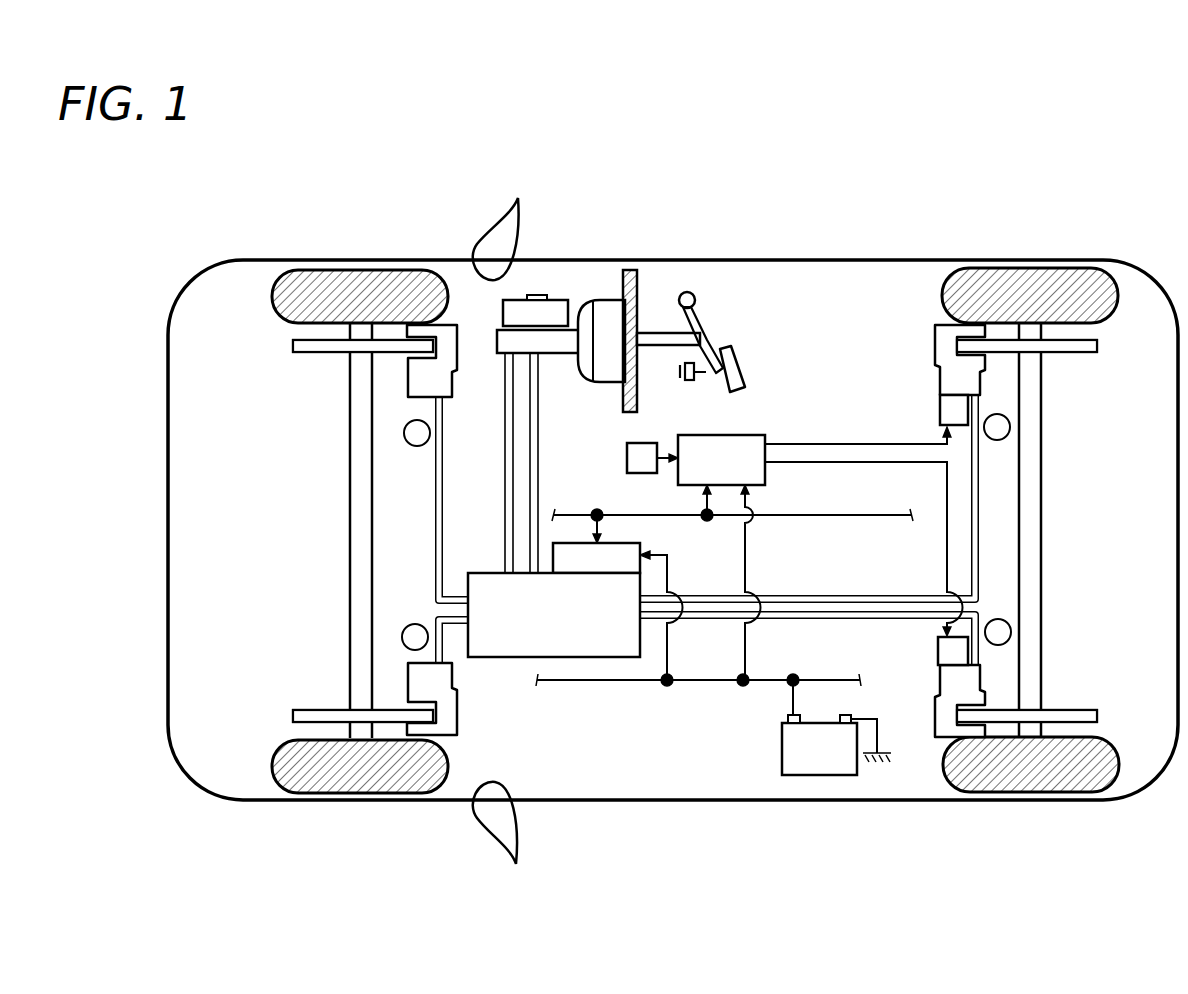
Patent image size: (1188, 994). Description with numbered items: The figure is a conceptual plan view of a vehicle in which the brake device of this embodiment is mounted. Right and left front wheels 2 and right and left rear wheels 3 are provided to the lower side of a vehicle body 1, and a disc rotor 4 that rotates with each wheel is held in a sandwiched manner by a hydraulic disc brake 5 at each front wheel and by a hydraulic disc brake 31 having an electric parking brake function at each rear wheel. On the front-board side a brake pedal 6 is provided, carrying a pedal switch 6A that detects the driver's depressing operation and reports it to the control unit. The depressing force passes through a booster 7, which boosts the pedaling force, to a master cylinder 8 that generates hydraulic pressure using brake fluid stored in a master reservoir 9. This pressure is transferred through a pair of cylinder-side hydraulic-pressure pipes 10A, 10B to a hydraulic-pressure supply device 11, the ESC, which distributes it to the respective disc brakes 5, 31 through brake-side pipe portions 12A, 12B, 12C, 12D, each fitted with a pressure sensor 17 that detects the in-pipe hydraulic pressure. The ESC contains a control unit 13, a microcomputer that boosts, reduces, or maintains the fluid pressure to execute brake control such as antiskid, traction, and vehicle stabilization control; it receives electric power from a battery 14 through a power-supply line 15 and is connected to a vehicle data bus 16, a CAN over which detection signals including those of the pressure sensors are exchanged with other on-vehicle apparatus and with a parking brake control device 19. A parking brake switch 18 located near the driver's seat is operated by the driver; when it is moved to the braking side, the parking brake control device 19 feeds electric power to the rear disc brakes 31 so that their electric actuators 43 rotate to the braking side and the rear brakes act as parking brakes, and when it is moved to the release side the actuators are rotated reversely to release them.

The vehicle body 1 is at (795, 259).
The front wheels 2 is at (343, 285).
The rear wheels 3 is at (1028, 282).
The disc rotor 4 is at (293, 346).
The hydraulic disc brake 5 is at (448, 330).
The brake pedal 6 is at (740, 357).
The pedal switch 6A is at (688, 381).
The booster 7 is at (603, 318).
The master cylinder 8 is at (508, 346).
The master reservoir 9 is at (547, 310).
The cylinder-side hydraulic-pressure pipe 10A is at (505, 443).
The cylinder-side hydraulic-pressure pipe 10B is at (540, 437).
The hydraulic-pressure supply device (ESC) 11 is at (520, 660).
The brake-side pipe portion 12A is at (435, 540).
The brake-side pipe portion 12B is at (435, 618).
The brake-side pipe portion 12C is at (982, 522).
The brake-side pipe portion 12D is at (984, 652).
The control unit 13 is at (640, 548).
The battery 14 is at (818, 778).
The power-supply line 15 is at (690, 683).
The vehicle data bus 16 is at (727, 520).
The pressure sensor 17 is at (404, 433).
The parking brake switch 18 is at (628, 456).
The parking brake control device 19 is at (750, 476).
The hydraulic disc brake with electric parking brake function 31 is at (935, 345).
The electric actuator 43 is at (940, 412).